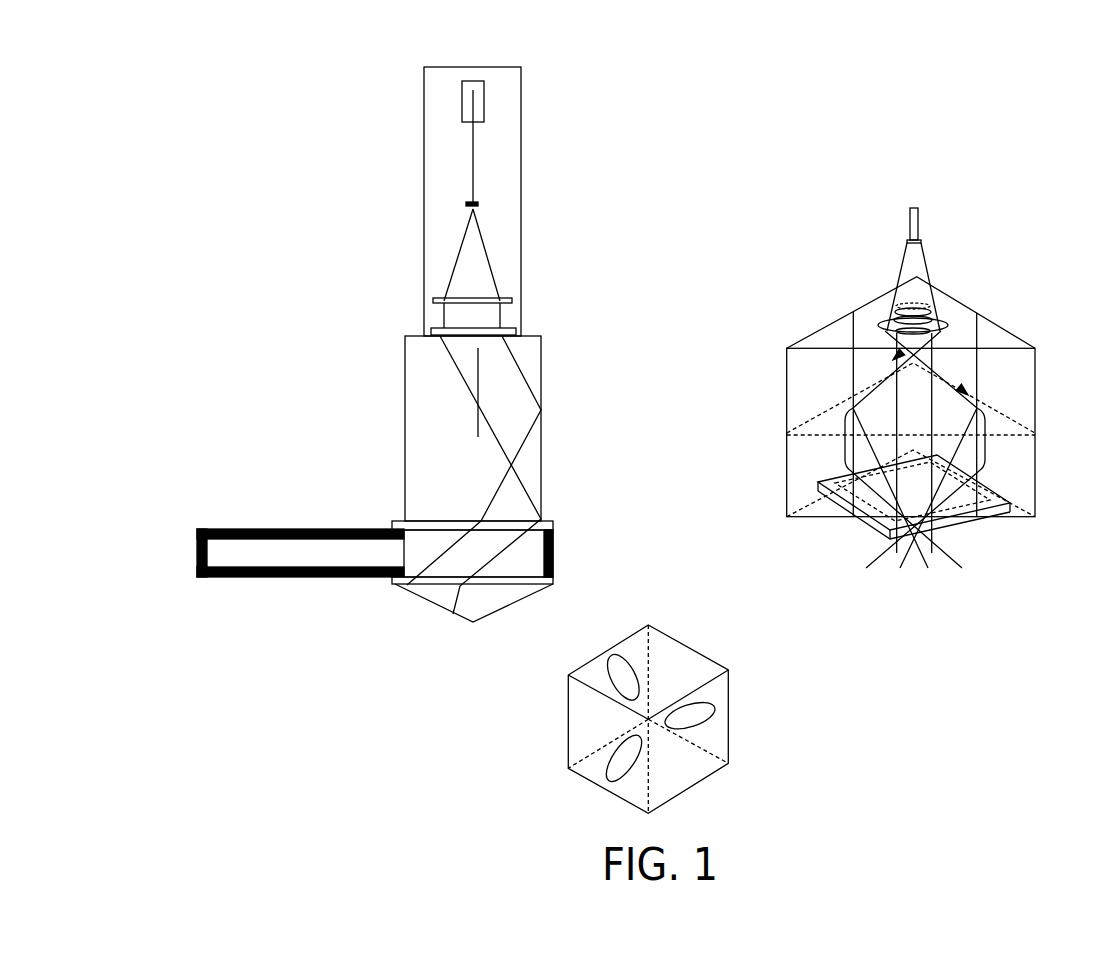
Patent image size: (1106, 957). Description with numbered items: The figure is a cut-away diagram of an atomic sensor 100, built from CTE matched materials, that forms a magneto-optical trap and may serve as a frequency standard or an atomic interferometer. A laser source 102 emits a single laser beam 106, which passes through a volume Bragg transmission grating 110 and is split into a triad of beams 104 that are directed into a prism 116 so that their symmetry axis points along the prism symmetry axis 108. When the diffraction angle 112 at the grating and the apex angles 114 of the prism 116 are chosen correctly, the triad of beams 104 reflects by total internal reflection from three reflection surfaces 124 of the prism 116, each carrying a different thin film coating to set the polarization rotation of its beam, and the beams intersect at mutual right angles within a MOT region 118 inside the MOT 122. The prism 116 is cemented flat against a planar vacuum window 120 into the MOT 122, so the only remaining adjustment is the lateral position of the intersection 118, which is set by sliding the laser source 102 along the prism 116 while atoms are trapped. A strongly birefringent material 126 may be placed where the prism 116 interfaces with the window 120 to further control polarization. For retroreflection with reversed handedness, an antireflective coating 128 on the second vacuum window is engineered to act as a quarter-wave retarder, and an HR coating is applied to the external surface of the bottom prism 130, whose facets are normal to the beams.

The atomic sensor 100 is at (1009, 168).
The laser source 102 is at (532, 216).
The triad of beams 104 is at (920, 385).
The single laser beam 106 is at (470, 190).
The prism symmetry axis 108 is at (477, 420).
The volume Bragg transmission grating 110 is at (517, 334).
The diffraction angle 112 is at (483, 450).
The apex angles 114 is at (826, 336).
The prism 116 is at (405, 398).
The MOT region 118 is at (495, 545).
The window 120 is at (573, 524).
The MOT 122 is at (553, 562).
The reflection surfaces 124 is at (558, 464).
The birefringent material 126 is at (529, 353).
The antireflective coating 128 is at (492, 585).
The bottom prism 130 is at (573, 710).